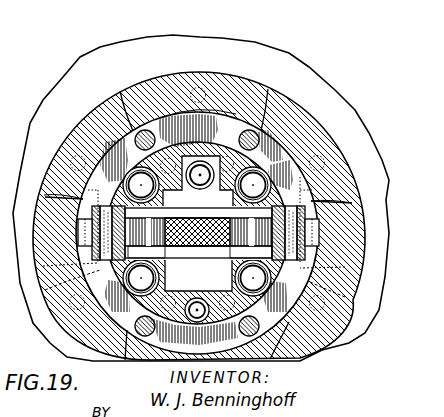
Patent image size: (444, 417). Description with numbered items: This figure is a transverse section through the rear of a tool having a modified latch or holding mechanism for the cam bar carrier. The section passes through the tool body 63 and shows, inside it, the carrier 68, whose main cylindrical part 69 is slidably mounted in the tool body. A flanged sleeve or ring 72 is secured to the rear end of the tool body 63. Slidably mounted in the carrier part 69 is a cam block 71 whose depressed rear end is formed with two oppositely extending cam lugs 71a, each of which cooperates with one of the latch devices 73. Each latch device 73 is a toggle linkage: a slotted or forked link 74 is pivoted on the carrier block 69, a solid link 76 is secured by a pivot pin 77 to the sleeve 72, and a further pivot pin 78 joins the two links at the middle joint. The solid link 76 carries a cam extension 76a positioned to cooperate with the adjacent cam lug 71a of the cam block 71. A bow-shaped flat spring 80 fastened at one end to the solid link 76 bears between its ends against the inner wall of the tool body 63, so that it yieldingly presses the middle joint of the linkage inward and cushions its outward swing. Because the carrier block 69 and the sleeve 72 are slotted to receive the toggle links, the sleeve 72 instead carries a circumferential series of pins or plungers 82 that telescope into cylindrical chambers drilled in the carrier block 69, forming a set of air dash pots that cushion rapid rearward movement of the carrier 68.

The tool body 63 is at (288, 58).
The carrier 68 is at (172, 110).
The main cylindrical part of carrier 69 is at (232, 112).
The cam block 71 is at (165, 252).
The cam lugs 71a is at (147, 256).
The flanged sleeve or ring 72 is at (265, 153).
The latch device 73 is at (44, 195).
The slotted or forked link 74 is at (43, 266).
The solid link 76 is at (50, 217).
The cam extension 76a is at (147, 213).
The pivot pin 77 is at (45, 290).
The pivot pin 78 is at (318, 139).
The bow-shape flat spring 80 is at (78, 236).
The pins or plungers 82 is at (120, 91).